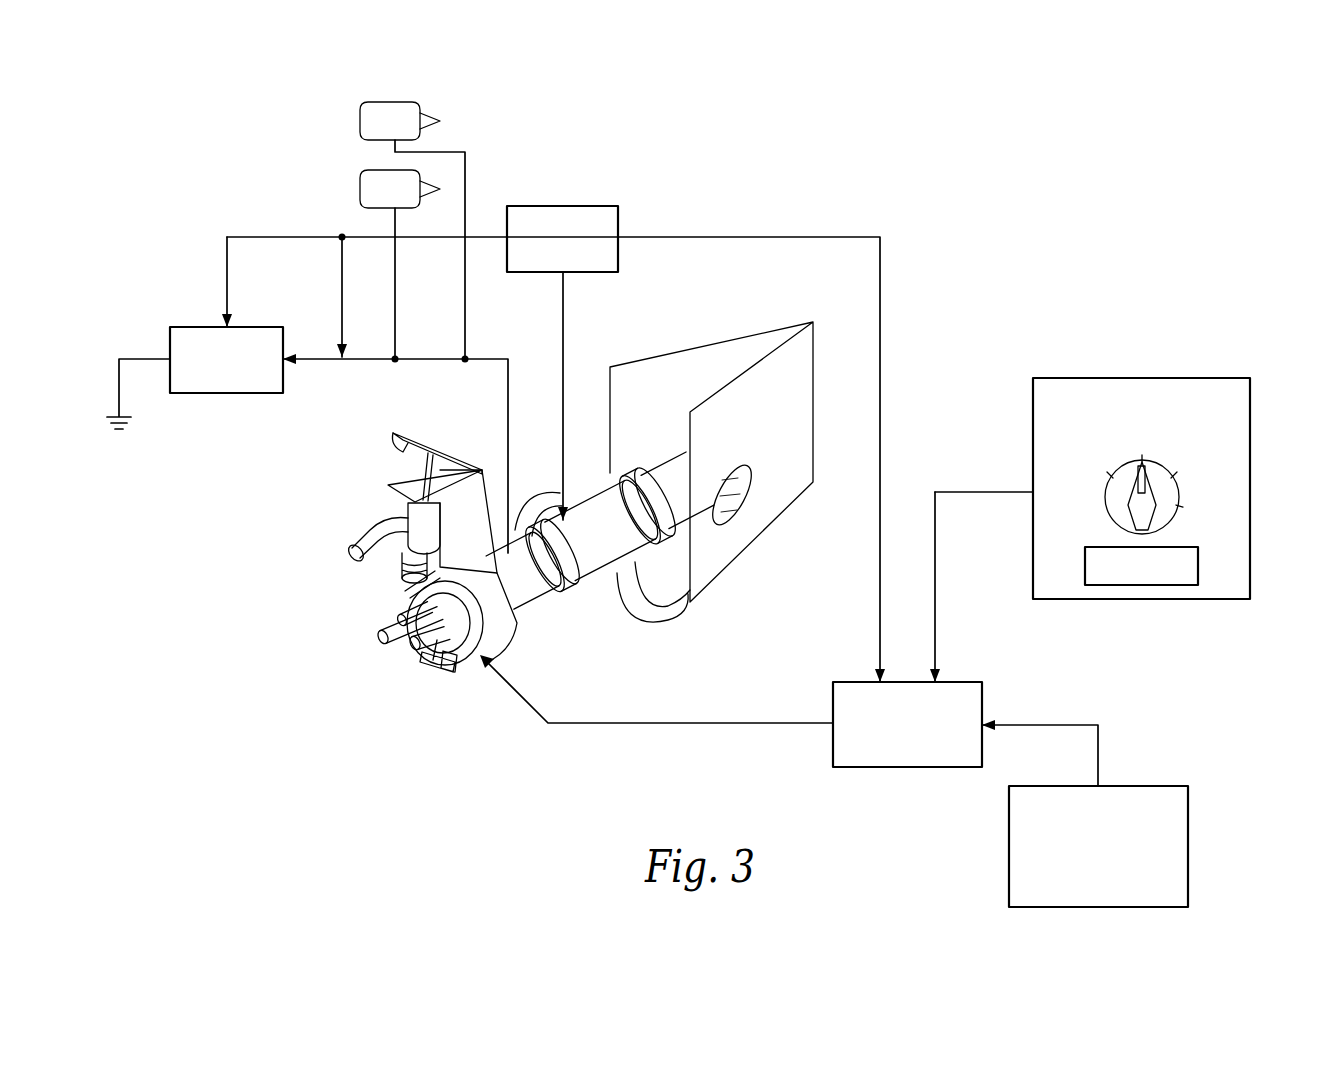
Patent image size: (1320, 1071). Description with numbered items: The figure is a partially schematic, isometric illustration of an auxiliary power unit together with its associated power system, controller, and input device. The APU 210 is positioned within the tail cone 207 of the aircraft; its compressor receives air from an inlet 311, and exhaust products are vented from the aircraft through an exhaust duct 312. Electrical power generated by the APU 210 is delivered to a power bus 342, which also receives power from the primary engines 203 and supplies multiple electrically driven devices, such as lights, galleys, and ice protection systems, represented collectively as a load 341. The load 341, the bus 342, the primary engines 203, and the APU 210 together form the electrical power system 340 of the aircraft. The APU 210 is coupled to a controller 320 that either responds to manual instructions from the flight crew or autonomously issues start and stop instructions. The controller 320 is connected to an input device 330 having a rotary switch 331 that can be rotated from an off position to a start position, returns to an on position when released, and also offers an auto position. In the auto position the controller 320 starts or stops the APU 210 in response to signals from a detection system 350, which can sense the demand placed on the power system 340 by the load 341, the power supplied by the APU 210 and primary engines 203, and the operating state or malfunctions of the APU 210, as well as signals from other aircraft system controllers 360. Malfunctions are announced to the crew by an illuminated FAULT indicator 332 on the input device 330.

The primary engines 203 is at (362, 104).
The tail cone 207 is at (803, 352).
The APU 210 is at (540, 588).
The inlet 311 is at (400, 450).
The exhaust duct 312 is at (660, 538).
The controller 320 is at (963, 682).
The input device 330 is at (1125, 466).
The rotary switch 331 is at (1180, 490).
The FAULT indicator 332 is at (1198, 565).
The electrical power system 340 is at (231, 493).
The load 341 is at (197, 327).
The power bus 342 is at (430, 361).
The detection system 350 is at (558, 206).
The other aircraft system controllers 360 is at (1155, 786).